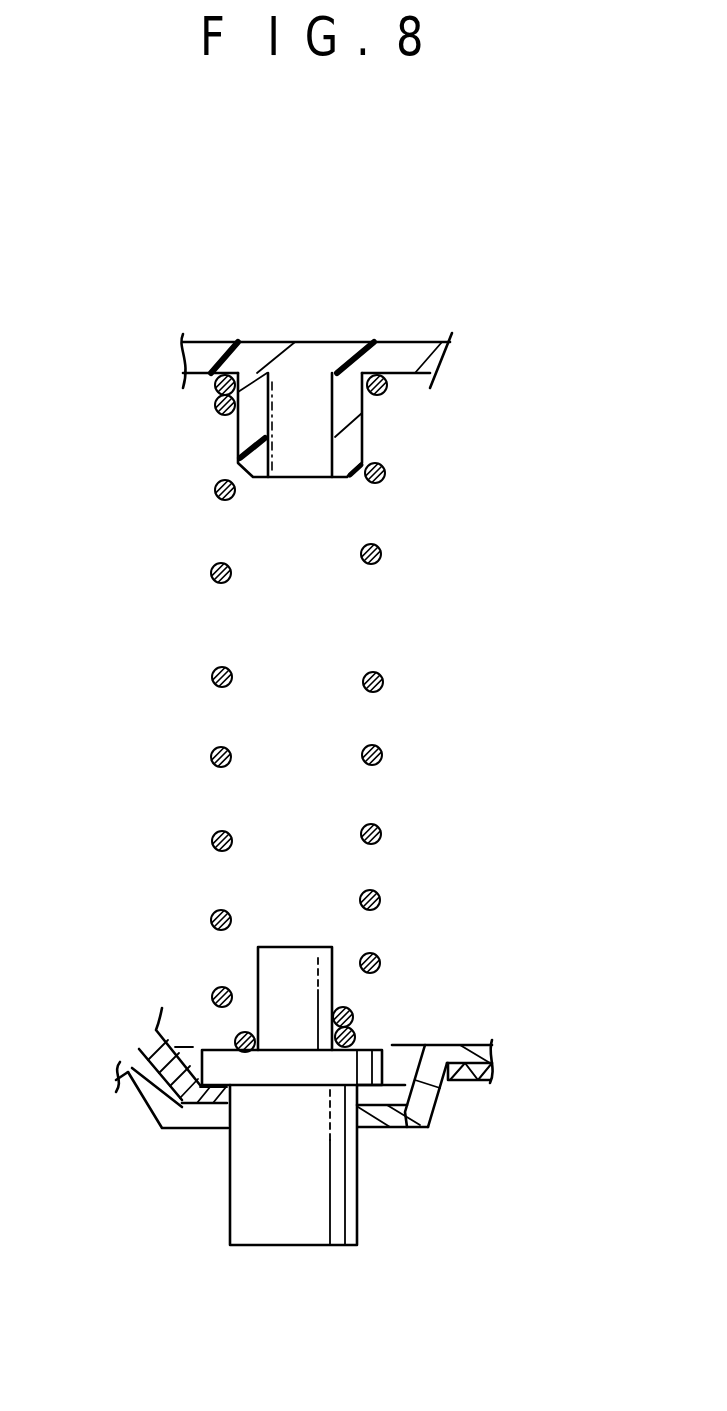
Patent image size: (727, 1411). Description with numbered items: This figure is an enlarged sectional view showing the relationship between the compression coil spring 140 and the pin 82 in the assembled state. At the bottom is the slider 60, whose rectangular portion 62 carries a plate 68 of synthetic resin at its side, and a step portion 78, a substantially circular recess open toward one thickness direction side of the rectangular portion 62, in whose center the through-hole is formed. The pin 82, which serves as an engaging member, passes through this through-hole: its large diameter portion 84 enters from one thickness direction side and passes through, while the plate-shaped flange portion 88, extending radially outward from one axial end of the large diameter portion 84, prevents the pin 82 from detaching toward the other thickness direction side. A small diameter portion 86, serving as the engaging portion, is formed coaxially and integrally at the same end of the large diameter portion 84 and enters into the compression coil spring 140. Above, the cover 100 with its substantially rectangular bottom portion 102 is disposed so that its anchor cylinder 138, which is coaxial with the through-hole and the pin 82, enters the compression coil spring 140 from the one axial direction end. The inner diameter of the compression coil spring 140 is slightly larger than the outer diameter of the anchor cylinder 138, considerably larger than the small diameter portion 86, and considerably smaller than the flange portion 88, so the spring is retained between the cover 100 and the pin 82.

The slider 60 is at (148, 1123).
The rectangular portion 62 is at (493, 1040).
The plate 68 is at (477, 1087).
The step portion 78 is at (407, 1130).
The pin 82 is at (335, 1257).
The large diameter portion 84 is at (357, 1213).
The small diameter portion 86 is at (330, 988).
The flange portion 88 is at (302, 1070).
The cover 100 is at (405, 328).
The bottom portion 102 is at (333, 343).
The anchor cylinder 138 is at (362, 443).
The compression coil spring 140 is at (385, 750).